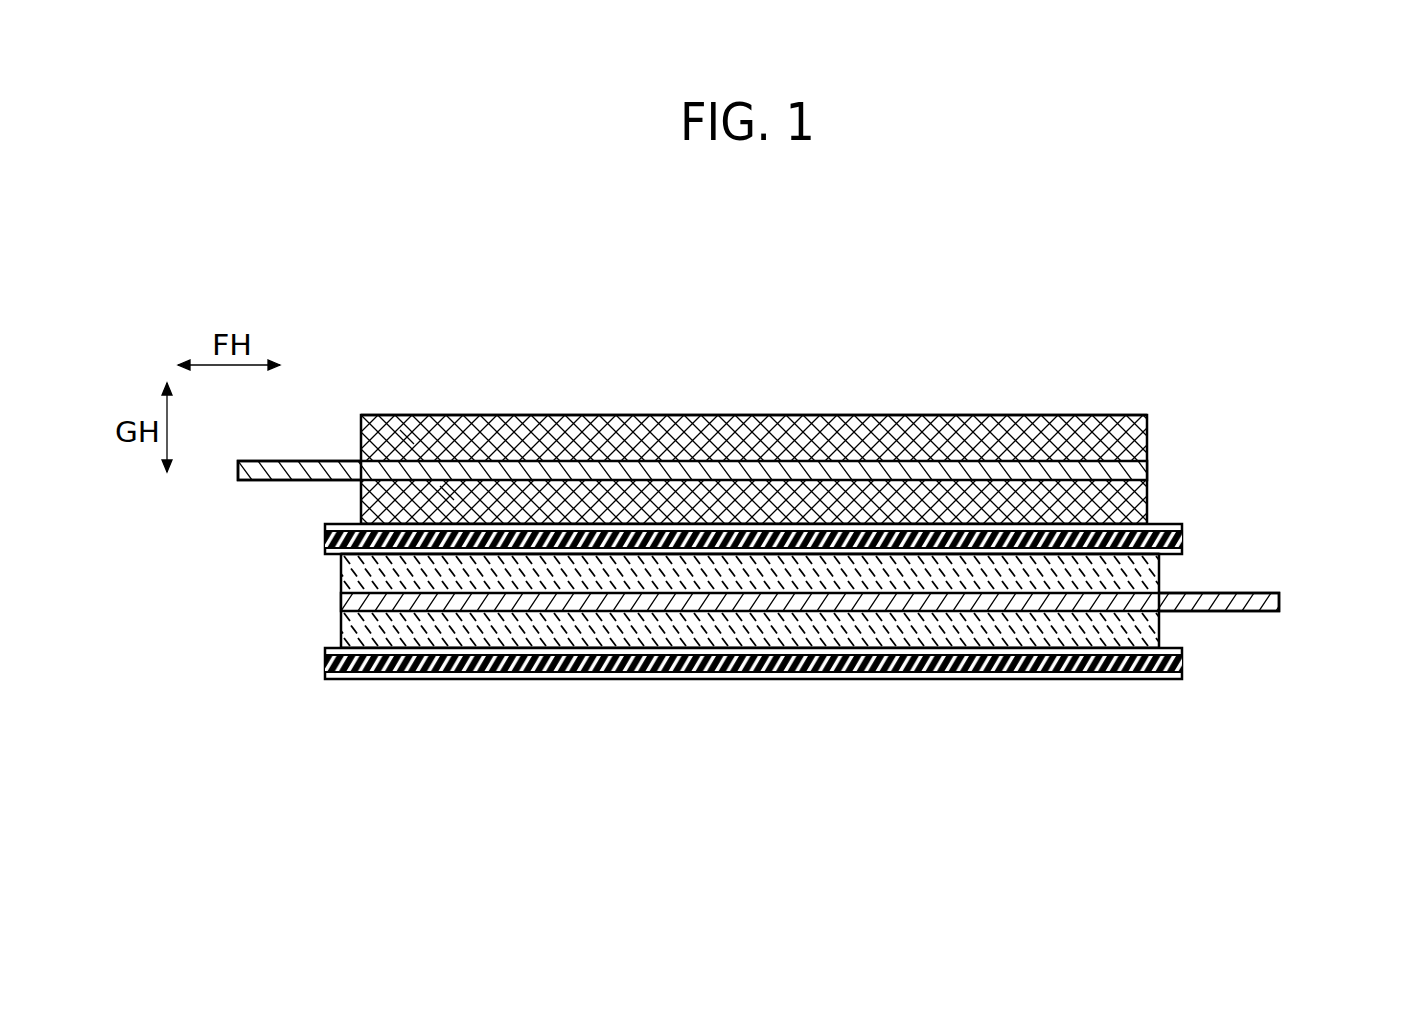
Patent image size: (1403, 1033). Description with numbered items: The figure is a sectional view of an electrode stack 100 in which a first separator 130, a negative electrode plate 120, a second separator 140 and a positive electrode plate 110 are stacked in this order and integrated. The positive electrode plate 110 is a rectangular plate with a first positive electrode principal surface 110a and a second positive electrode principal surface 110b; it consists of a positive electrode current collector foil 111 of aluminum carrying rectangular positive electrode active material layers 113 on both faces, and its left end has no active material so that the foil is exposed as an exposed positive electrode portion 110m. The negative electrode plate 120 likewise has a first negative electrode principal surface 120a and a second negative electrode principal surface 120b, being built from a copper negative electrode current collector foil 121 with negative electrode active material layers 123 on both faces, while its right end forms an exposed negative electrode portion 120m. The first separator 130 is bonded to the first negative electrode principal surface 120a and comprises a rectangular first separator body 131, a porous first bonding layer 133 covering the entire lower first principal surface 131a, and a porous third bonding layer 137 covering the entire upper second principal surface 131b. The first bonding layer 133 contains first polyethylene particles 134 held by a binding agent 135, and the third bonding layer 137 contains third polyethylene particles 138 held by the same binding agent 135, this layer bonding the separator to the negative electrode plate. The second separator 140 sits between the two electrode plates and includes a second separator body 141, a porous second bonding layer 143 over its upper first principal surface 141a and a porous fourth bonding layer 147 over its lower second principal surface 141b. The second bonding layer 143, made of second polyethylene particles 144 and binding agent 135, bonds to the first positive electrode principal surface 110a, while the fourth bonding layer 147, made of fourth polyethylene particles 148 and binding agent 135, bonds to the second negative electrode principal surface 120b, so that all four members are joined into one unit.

The electrode stack 100 is at (1104, 305).
The positive electrode plate 110 is at (496, 403).
The first positive electrode principal surface 110a is at (614, 537).
The second positive electrode principal surface 110b is at (577, 415).
The exposed positive electrode portion 110m is at (278, 467).
The positive electrode current collector foil 111 is at (331, 470).
The positive electrode active material layer 113 is at (447, 493).
The negative electrode plate 120 is at (1173, 635).
The first negative electrode principal surface 120a is at (915, 648).
The second negative electrode principal surface 120b is at (1057, 557).
The exposed negative electrode portion 120m is at (1268, 608).
The negative electrode current collector foil 121 is at (1213, 594).
The negative electrode active material layer 123 is at (1056, 582).
The first separator 130 is at (821, 694).
The first separator body 131 is at (764, 665).
The first principal surface of first separator body 131a is at (718, 672).
The second principal surface of first separator body 131b is at (665, 642).
The first bonding layer 133 is at (528, 673).
The first polyethylene particles 134 is at (753, 675).
The binding agent 135 is at (753, 675).
The third bonding layer 137 is at (398, 650).
The third polyethylene particles 138 is at (753, 651).
The second separator 140 is at (1182, 545).
The second separator body 141 is at (1133, 540).
The first principal surface of second separator body 141a is at (993, 532).
The second principal surface of second separator body 141b is at (913, 556).
The second bonding layer 143 is at (828, 533).
The second polyethylene particles 144 is at (753, 527).
The fourth bonding layer 147 is at (713, 553).
The fourth polyethylene particles 148 is at (753, 551).